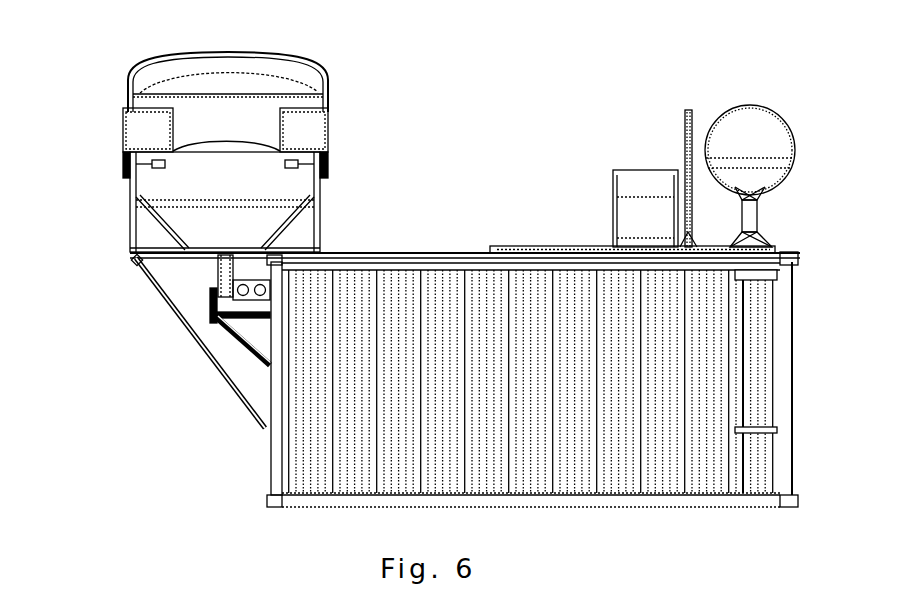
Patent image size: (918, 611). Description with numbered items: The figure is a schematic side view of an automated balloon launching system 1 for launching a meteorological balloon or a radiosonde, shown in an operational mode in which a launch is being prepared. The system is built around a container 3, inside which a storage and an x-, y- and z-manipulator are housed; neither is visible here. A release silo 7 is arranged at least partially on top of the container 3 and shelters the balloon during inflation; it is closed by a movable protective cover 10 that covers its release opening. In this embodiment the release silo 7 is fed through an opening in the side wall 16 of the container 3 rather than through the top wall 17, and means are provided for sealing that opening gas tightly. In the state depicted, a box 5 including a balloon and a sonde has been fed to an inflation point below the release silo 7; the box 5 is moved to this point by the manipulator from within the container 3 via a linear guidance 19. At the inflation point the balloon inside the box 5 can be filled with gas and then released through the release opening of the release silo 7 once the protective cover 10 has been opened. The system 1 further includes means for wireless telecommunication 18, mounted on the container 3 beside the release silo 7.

The automated balloon launching system 1 is at (488, 190).
The container 3 is at (300, 445).
The box 5 is at (218, 278).
The release silo 7 is at (150, 186).
The protective cover 10 is at (133, 103).
The side wall 16 is at (270, 392).
The top wall 17 is at (417, 253).
The means for wireless telecommunication 18 is at (768, 145).
The linear guidance 19 is at (215, 300).